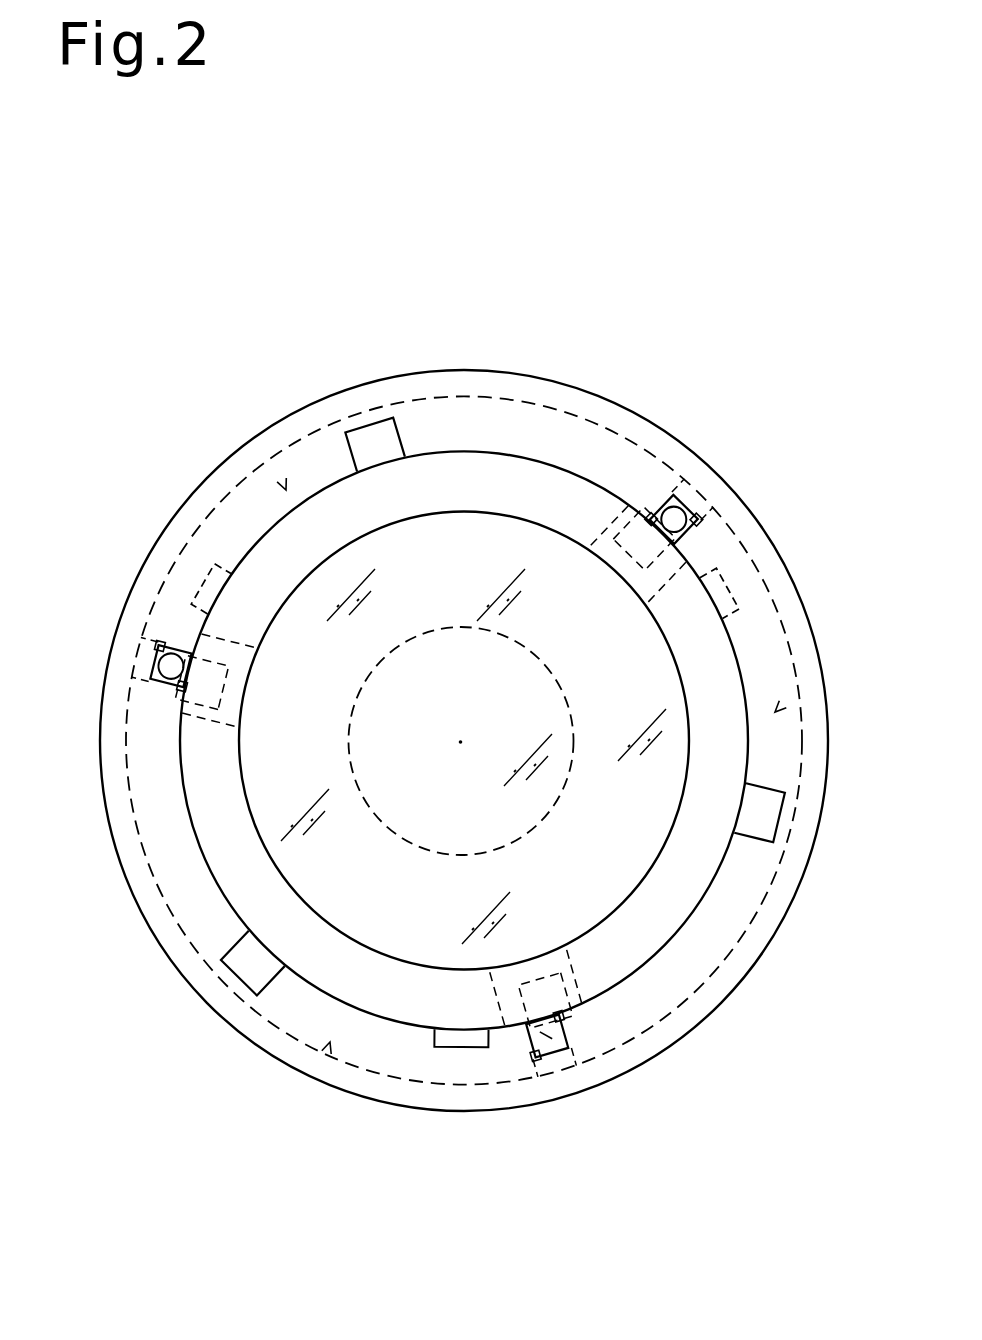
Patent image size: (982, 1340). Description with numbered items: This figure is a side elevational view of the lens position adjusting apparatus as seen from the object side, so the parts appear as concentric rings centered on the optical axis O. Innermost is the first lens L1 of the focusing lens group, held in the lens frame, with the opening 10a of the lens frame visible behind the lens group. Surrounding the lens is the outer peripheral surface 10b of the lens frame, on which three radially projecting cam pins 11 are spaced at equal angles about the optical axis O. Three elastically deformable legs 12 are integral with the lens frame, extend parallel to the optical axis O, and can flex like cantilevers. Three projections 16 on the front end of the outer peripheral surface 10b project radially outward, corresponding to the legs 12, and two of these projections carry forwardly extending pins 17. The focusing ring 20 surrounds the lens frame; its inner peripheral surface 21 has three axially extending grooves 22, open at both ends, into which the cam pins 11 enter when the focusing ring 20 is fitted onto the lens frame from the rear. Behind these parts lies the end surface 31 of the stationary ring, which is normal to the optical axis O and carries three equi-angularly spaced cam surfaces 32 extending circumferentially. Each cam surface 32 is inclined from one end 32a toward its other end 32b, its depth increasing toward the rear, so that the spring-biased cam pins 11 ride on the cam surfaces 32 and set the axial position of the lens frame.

The opening 10a is at (433, 627).
The outer peripheral surface 10b is at (185, 808).
The cam pin 11 is at (740, 592).
The elastically deformable leg 12 is at (610, 470).
The projection 16 is at (693, 523).
The pin 17 is at (678, 514).
The focusing ring 20 is at (520, 385).
The inner peripheral surface 21 is at (227, 887).
The groove 22 is at (365, 426).
The end surface 31 is at (446, 410).
The cam surface 32 is at (738, 556).
The one end of cam surface 32a is at (662, 500).
The other end of cam surface 32b is at (286, 490).
The optical axis O is at (461, 742).
The first lens L1 is at (607, 862).